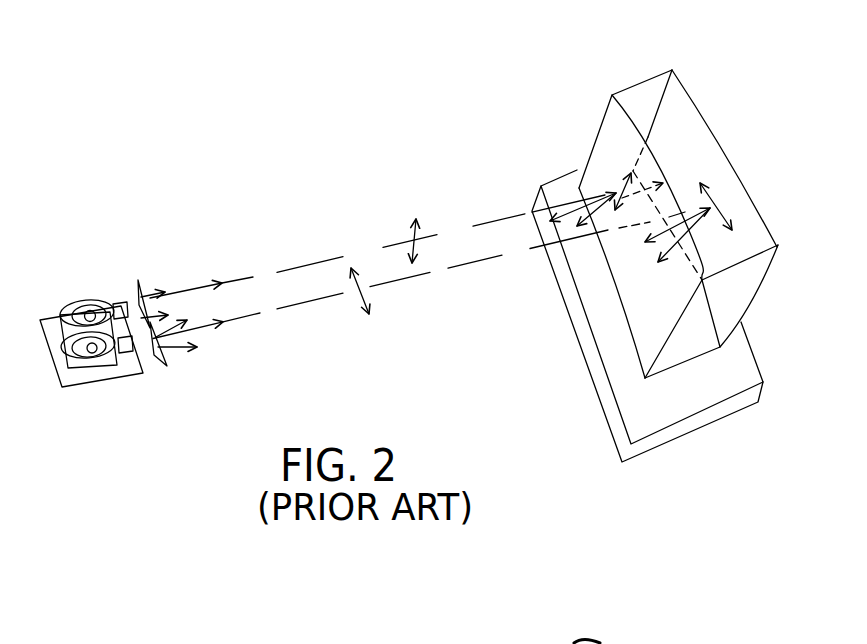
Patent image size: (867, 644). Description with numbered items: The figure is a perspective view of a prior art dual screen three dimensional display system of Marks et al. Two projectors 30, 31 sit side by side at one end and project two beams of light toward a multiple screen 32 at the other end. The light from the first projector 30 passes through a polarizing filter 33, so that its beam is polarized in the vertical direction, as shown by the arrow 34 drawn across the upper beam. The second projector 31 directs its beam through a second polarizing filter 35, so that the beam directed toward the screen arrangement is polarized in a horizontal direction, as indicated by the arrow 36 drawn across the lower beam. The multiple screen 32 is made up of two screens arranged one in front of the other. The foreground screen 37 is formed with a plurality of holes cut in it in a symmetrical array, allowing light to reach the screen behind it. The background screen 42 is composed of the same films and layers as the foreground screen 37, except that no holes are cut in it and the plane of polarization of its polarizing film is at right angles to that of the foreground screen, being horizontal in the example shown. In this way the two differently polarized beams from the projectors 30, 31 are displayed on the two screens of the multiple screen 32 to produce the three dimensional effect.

The projector 30 is at (75, 302).
The projector 31 is at (102, 368).
The multiple screen 32 is at (580, 128).
The polarizing filter 33 is at (138, 280).
The arrow 34 is at (414, 236).
The polarizing filter 35 is at (165, 352).
The arrow 36 is at (368, 292).
The foreground screen 37 is at (615, 117).
The background screen 42 is at (716, 152).